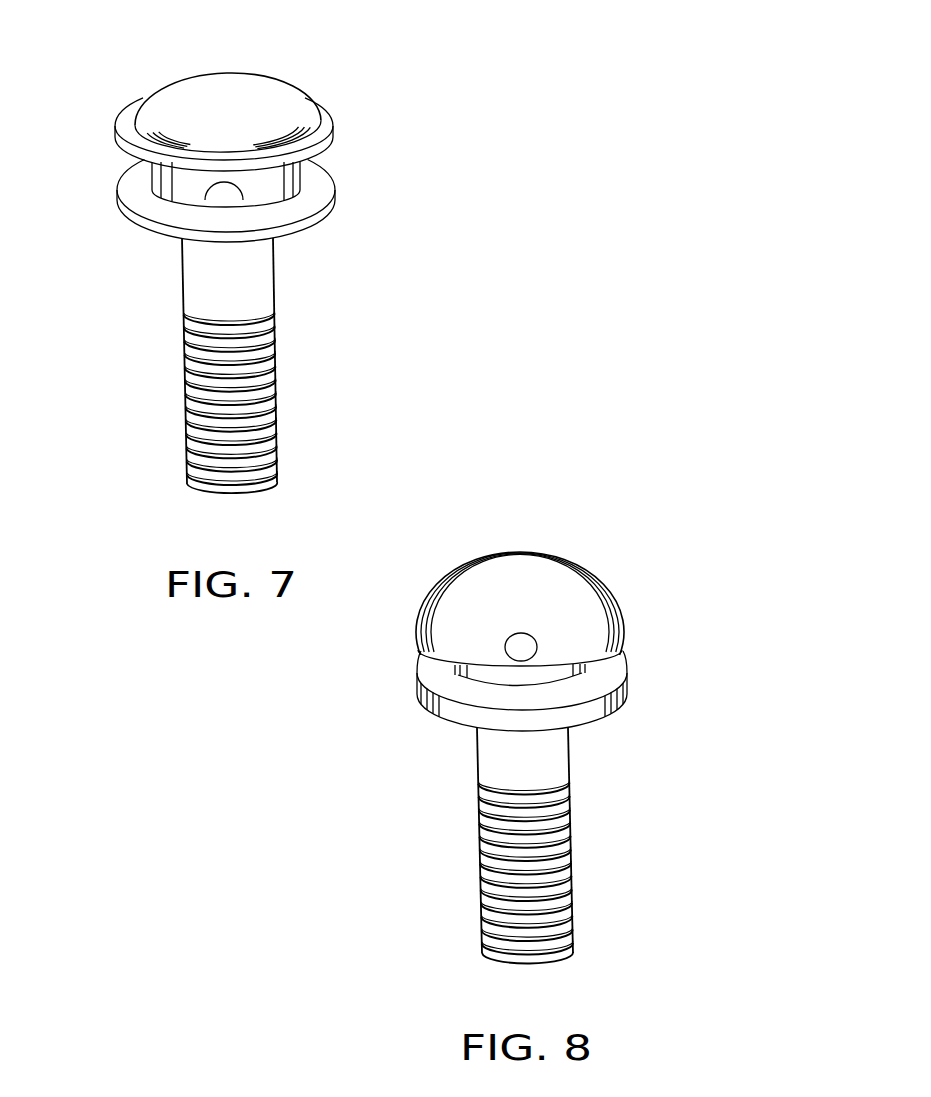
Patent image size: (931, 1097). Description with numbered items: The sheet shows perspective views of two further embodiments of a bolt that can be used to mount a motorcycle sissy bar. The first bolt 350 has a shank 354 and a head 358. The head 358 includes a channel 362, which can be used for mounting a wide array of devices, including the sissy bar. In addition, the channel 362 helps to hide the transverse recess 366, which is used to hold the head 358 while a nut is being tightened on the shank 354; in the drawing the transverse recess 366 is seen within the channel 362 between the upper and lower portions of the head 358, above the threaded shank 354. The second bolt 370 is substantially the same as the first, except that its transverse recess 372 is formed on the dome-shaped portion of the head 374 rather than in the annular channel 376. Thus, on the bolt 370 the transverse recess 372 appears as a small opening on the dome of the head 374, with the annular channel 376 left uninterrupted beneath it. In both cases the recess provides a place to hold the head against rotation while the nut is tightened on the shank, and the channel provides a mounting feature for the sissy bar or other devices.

In FIG. 7, the bolt 350 is at (279, 262).
In FIG. 7, the shank 354 is at (295, 365).
In FIG. 7, the head 358 is at (276, 101).
In FIG. 7, the channel 362 is at (302, 182).
In FIG. 7, the transverse recess 366 is at (142, 238).
In FIG. 8, the bolt 370 is at (557, 733).
In FIG. 8, the transverse recess 372 is at (452, 719).
In FIG. 8, the head 374 is at (544, 584).
In FIG. 8, the annular channel 376 is at (720, 668).